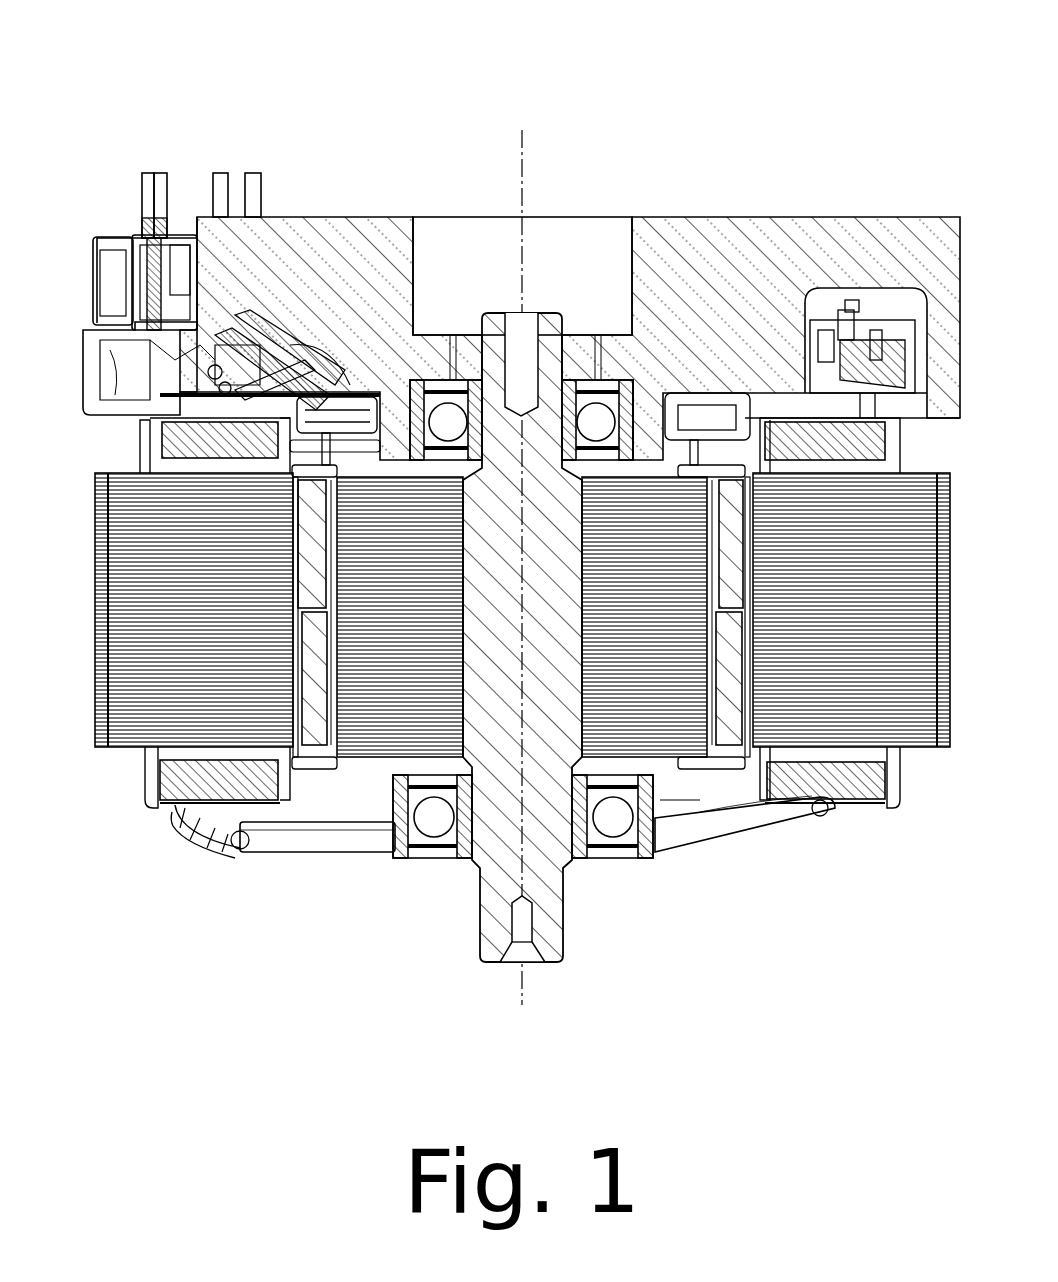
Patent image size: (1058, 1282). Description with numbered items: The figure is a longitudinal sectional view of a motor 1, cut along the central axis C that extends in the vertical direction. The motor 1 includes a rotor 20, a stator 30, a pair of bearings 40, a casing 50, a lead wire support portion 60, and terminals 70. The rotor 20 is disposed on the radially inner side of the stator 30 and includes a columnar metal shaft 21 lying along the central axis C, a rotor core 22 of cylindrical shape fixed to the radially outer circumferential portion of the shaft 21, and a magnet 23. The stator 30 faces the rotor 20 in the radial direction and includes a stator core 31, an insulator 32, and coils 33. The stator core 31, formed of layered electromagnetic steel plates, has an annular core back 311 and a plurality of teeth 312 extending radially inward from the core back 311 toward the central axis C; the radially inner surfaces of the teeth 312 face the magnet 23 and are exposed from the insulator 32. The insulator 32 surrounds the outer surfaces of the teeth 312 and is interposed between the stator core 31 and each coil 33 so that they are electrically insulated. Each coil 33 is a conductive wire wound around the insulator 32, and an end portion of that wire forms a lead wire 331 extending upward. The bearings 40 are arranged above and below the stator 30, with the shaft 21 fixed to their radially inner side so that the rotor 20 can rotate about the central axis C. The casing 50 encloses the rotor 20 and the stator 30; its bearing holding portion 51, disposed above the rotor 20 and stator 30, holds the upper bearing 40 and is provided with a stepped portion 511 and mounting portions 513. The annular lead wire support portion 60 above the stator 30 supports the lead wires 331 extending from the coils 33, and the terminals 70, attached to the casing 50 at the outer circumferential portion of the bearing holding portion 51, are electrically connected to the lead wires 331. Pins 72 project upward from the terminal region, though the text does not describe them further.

The motor 1 is at (385, 68).
The rotor 20 is at (710, 772).
The shaft 21 is at (549, 963).
The rotor core 22 is at (673, 735).
The magnet 23 is at (318, 742).
The stator 30 is at (188, 862).
The stator core 31 is at (93, 752).
The core back 311 is at (132, 770).
The teeth 312 is at (284, 806).
The insulator 32 is at (140, 770).
The coil 33 is at (247, 842).
The lead wire 331 is at (168, 275).
The bearing 40 is at (576, 378).
The casing 50 is at (776, 215).
The bearing holding portion 51 is at (582, 216).
The stepped portion 511 is at (185, 212).
The mounting portion 513 is at (85, 250).
The lead wire support portion 60 is at (128, 404).
The terminal 70 is at (128, 232).
The terminal pin 72 is at (148, 172).
The central axis C is at (519, 150).